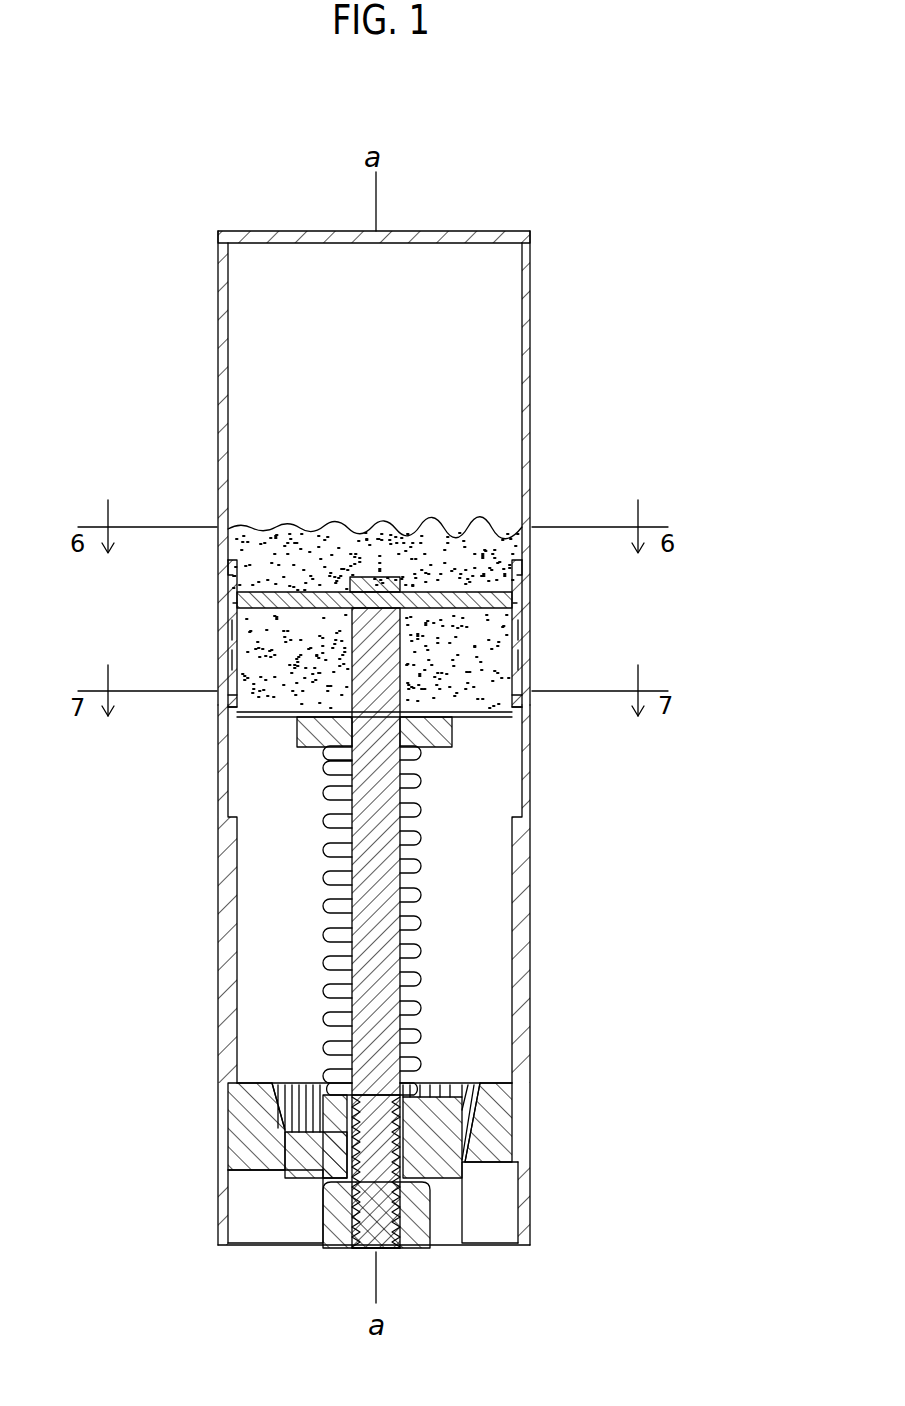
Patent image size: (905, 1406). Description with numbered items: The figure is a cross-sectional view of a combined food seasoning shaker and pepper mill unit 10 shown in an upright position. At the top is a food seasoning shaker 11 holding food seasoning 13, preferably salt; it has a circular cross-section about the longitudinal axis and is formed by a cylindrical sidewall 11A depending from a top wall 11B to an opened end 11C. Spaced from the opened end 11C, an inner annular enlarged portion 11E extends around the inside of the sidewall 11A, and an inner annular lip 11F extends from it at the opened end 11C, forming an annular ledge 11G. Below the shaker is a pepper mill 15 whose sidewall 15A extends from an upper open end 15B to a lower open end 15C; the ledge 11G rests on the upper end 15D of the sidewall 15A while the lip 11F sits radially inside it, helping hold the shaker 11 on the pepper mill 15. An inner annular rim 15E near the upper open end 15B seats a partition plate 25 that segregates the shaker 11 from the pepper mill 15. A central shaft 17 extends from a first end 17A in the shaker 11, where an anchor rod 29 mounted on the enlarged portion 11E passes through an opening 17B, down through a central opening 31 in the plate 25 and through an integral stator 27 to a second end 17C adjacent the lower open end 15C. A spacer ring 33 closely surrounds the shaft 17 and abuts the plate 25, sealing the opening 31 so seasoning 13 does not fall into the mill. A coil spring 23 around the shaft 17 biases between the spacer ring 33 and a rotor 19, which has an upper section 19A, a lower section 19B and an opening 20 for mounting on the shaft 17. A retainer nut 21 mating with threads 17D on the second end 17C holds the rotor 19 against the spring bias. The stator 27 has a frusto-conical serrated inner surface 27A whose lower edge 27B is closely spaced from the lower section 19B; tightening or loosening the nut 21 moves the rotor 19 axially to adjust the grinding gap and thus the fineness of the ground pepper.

The food seasoning shaker and pepper mill unit 10 is at (614, 239).
The food seasoning shaker 11 is at (434, 444).
The cylindrical sidewall 11A is at (528, 302).
The top wall 11B is at (452, 235).
The opened end 11C is at (222, 697).
The inner annular enlarged portion 11E is at (222, 578).
The inner annular lip 11F is at (232, 650).
The annular ledge 11G is at (222, 608).
The food seasoning 13 is at (500, 642).
The pepper mill 15 is at (389, 1005).
The sidewall 15A is at (517, 895).
The upper open end 15B is at (222, 598).
The lower open end 15C is at (240, 1228).
The upper end of the sidewall 15D is at (224, 634).
The inner annular rim 15E is at (224, 705).
The central shaft 17 is at (429, 917).
The first end of the shaft 17A is at (370, 580).
The opening in the first end 17B is at (410, 590).
The second end of the shaft 17C is at (375, 1215).
The threads 17D is at (322, 1243).
The rotor 19 is at (368, 1150).
The upper section of the rotor 19A is at (283, 1117).
The lower section of the rotor 19B is at (283, 1142).
The opening 20 is at (345, 1185).
The retainer nut 21 is at (412, 1248).
The coil spring 23 is at (422, 832).
The partition plate 25 is at (520, 714).
The stator 27 is at (378, 1120).
The serrated inner surface 27A is at (273, 1093).
The lower edge of the serrated surface 27B is at (283, 1168).
The anchor rod 29 is at (520, 532).
The central opening 31 is at (323, 753).
The spacer ring 33 is at (430, 753).